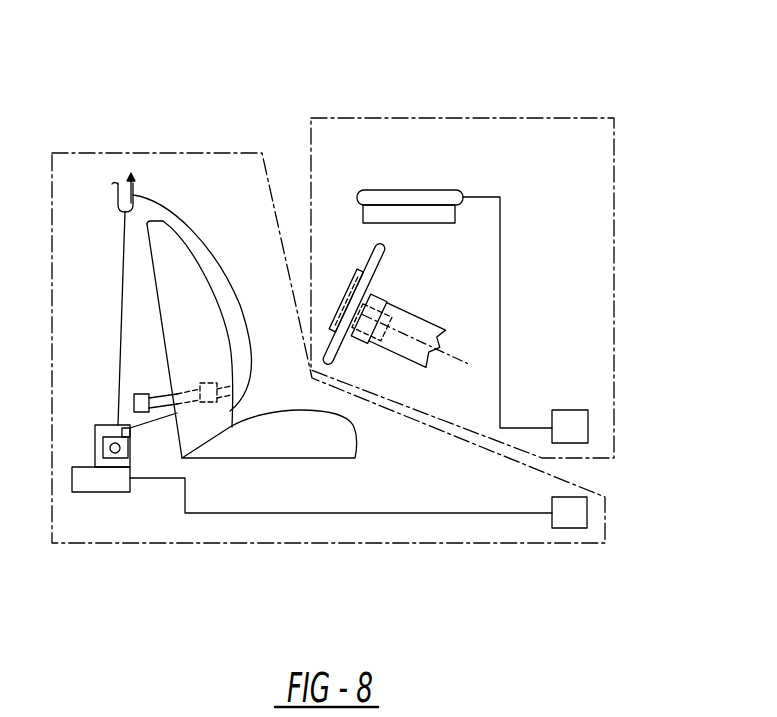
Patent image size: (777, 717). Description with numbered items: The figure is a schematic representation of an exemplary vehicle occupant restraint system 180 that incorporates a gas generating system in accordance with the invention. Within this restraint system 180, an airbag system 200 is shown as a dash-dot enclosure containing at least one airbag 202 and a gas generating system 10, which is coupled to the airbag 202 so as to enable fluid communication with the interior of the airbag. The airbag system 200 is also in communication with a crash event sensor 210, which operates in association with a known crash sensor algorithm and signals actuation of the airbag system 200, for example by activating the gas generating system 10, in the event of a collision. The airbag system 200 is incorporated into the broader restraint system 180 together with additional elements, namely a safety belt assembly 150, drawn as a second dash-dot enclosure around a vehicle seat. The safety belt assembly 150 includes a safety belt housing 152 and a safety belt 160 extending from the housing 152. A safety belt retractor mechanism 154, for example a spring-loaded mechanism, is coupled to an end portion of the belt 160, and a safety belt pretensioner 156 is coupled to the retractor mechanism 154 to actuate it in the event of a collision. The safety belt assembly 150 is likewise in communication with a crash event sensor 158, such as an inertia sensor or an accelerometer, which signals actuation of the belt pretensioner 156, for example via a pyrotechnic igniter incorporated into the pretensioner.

The vehicle occupant restraint system 180 is at (214, 50).
The gas generating system 10 is at (411, 180).
The airbag 202 is at (425, 213).
The airbag system 200 is at (615, 203).
The crash event sensor 210 is at (570, 425).
The safety belt 160 is at (167, 200).
The safety belt retractor mechanism 154 is at (70, 401).
The safety belt housing 152 is at (100, 448).
The safety belt pretensioner 156 is at (100, 482).
The crash event sensor 158 is at (568, 528).
The safety belt assembly 150 is at (290, 547).